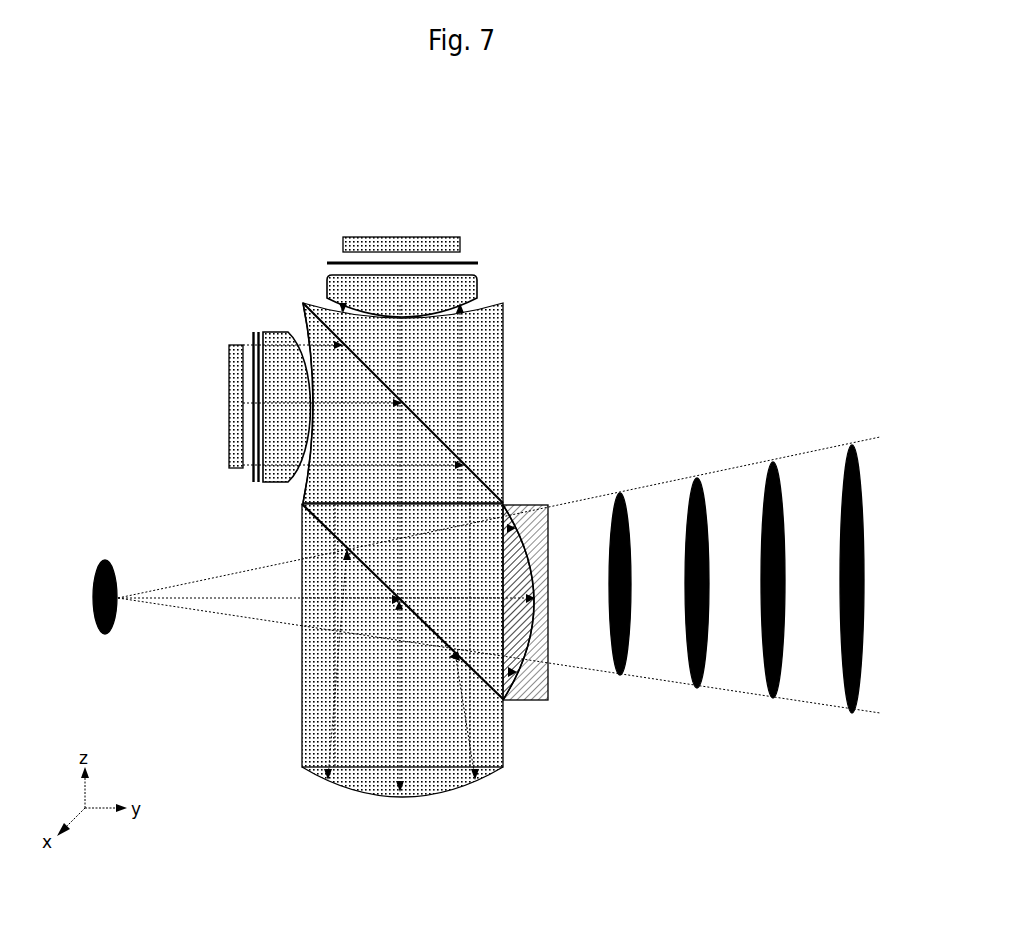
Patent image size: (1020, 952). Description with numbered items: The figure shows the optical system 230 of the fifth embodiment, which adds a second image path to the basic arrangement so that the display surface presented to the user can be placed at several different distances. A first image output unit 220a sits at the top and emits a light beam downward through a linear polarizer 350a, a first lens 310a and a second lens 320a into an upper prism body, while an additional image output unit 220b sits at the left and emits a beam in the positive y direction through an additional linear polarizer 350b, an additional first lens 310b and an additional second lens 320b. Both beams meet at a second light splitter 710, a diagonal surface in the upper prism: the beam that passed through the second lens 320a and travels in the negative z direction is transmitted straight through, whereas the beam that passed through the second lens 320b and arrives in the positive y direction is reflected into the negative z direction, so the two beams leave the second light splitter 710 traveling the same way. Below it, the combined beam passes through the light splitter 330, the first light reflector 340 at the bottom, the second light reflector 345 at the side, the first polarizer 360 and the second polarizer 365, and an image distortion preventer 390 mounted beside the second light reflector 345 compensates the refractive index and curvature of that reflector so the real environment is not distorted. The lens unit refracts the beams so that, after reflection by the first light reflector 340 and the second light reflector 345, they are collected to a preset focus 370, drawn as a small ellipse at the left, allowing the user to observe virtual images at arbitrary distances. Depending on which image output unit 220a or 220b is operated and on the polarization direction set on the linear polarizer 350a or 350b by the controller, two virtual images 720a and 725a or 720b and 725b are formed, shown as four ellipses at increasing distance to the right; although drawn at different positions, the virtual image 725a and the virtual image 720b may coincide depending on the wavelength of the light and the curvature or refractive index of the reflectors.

The optical system 230 is at (243, 150).
The image output unit 220a is at (462, 244).
The linear polarizer 350a is at (480, 263).
The first lens 310a is at (479, 290).
The second lens 320a is at (504, 306).
The second light splitter 710 is at (452, 450).
The additional image output unit 220b is at (232, 345).
The additional linear polarizer 350b is at (253, 332).
The additional first lens 310b is at (268, 332).
The additional second lens 320b is at (302, 302).
The light splitter 330 is at (302, 526).
The first light reflector 340 is at (312, 780).
The first polarizer 360 is at (446, 768).
The second polarizer 365 is at (534, 568).
The second light reflector 345 is at (538, 643).
The image distortion preventer 390 is at (540, 701).
The preset focus 370 is at (106, 560).
The virtual image 720a is at (620, 493).
The virtual image 725a is at (697, 478).
The virtual image 720b is at (773, 462).
The virtual image 725b is at (852, 445).